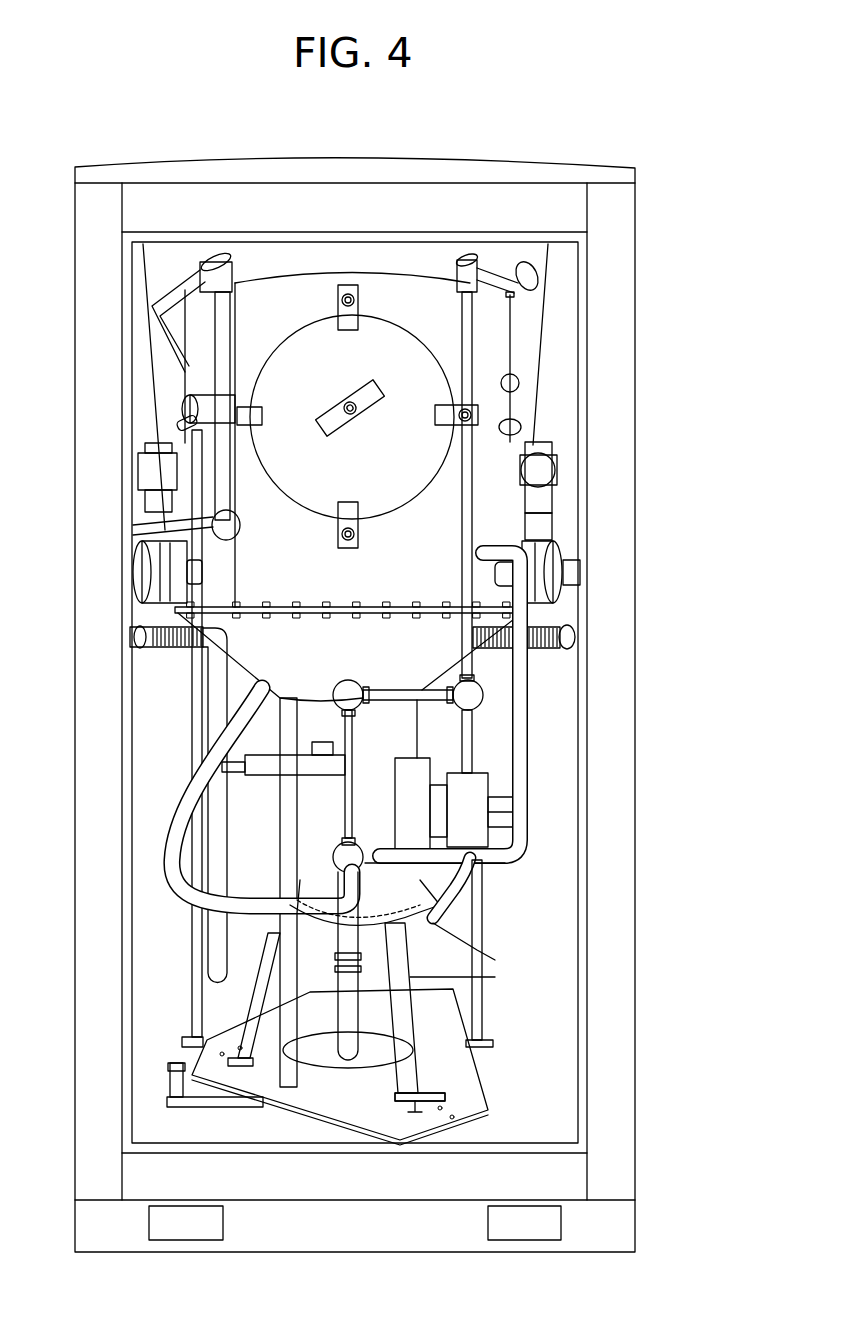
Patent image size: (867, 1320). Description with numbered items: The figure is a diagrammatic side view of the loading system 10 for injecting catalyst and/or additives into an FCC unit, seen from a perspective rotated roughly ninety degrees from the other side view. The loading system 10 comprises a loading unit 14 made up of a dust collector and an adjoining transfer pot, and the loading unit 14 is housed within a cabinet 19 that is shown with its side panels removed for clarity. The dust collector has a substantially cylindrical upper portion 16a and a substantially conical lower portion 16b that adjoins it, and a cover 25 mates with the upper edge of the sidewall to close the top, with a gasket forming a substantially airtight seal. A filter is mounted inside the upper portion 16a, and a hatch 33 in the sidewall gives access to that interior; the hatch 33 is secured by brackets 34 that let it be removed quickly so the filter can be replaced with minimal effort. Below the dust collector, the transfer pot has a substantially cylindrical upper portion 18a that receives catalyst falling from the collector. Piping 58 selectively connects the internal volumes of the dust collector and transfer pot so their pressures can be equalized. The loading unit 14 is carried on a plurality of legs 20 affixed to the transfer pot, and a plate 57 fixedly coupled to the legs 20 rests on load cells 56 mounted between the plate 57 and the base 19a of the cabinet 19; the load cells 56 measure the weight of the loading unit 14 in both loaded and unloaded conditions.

The loading system 10 is at (410, 665).
The loading unit 14 is at (348, 402).
The cover 25 is at (278, 270).
The upper portion 16a is at (284, 316).
The lower portion 16b is at (319, 661).
The hatch 33 is at (326, 391).
The brackets 34 is at (359, 302).
The upper portion 18a is at (401, 739).
The piping 58 is at (184, 818).
The legs 20 is at (412, 1020).
The cabinet 19 is at (642, 391).
The base 19a is at (229, 1137).
The plate 57 is at (348, 1104).
The load cells 56 is at (452, 1130).